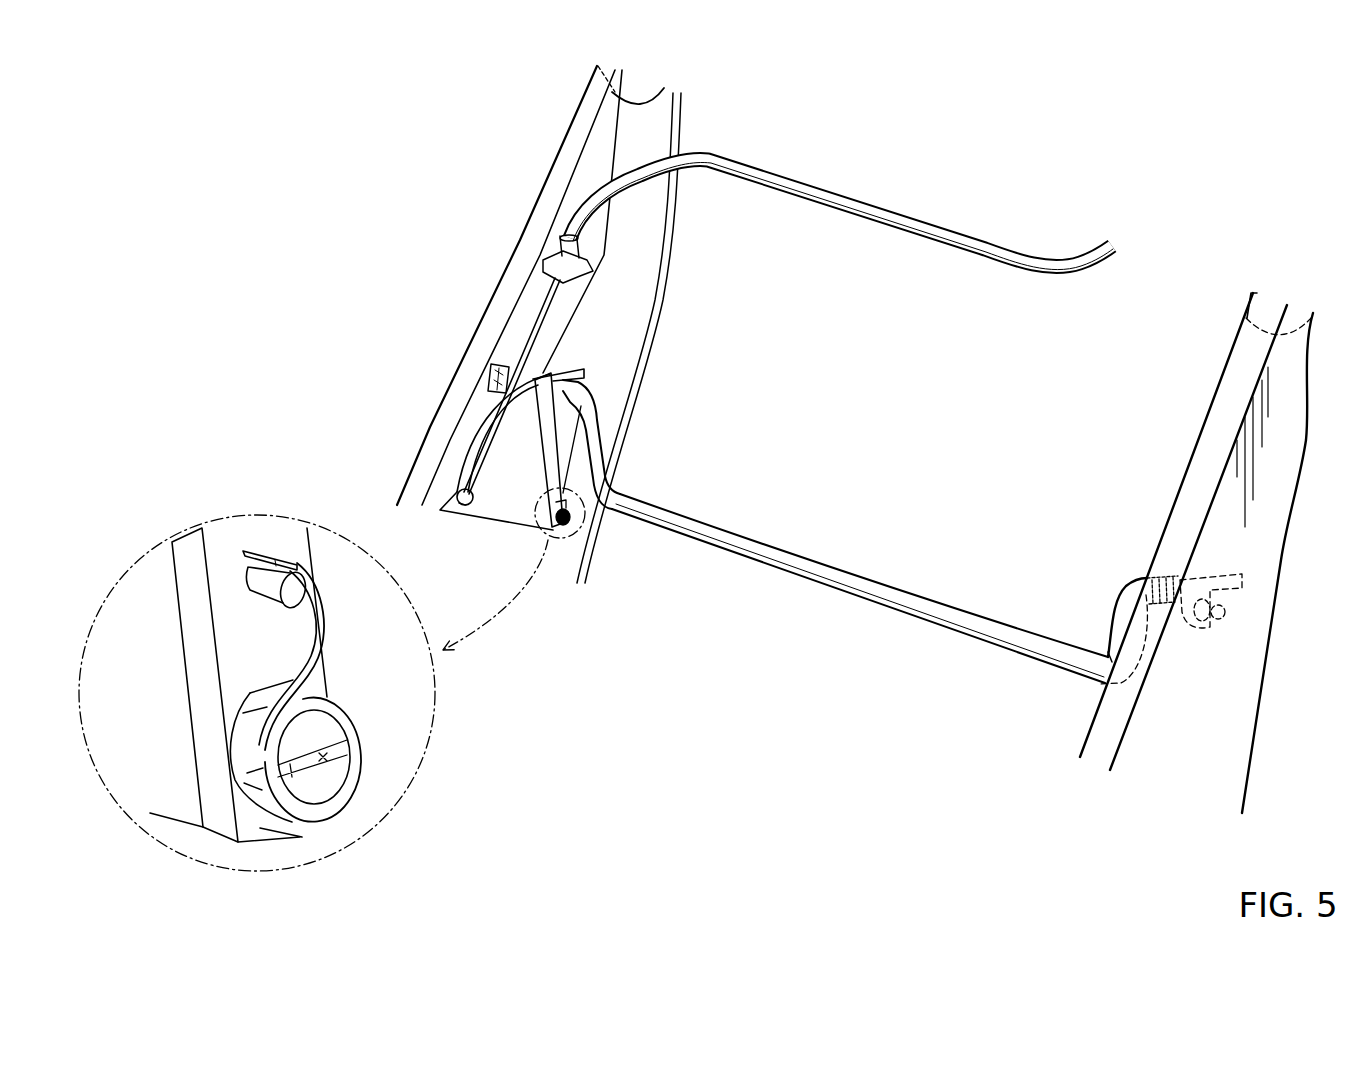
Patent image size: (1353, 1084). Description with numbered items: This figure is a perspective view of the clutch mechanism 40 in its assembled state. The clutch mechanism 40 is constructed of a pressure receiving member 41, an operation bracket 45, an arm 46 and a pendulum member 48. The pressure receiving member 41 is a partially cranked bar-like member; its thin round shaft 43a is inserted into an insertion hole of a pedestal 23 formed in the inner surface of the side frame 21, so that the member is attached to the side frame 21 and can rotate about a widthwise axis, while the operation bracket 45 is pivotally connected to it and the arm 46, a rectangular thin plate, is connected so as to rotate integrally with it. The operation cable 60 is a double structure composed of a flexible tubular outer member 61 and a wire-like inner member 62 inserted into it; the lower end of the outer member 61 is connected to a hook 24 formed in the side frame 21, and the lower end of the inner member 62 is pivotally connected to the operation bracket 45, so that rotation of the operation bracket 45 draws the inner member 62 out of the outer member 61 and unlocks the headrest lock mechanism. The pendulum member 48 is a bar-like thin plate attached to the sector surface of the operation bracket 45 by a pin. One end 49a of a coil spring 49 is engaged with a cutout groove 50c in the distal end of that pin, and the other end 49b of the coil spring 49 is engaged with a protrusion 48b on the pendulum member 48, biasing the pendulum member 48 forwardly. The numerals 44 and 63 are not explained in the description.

The side frame 21 is at (453, 408).
The pedestal 23 is at (1259, 613).
The hook 24 is at (590, 270).
The clutch mechanism 40 is at (622, 635).
The pressure receiving member 41 is at (870, 537).
The thin round shaft 43a is at (1221, 620).
The rod body 44 is at (847, 590).
The operation bracket 45 is at (498, 503).
The arm 46 is at (493, 373).
The pendulum member 48 is at (550, 442).
The protrusion 48b is at (253, 578).
The coil spring 49 is at (297, 732).
The one end of the coil spring 49a is at (313, 770).
The other end of the coil spring 49b is at (262, 558).
The cutout groove 50c is at (347, 757).
The operation cable 60 is at (841, 198).
The outer member 61 is at (943, 237).
The inner member 62 is at (533, 318).
The bolt 63 is at (465, 505).